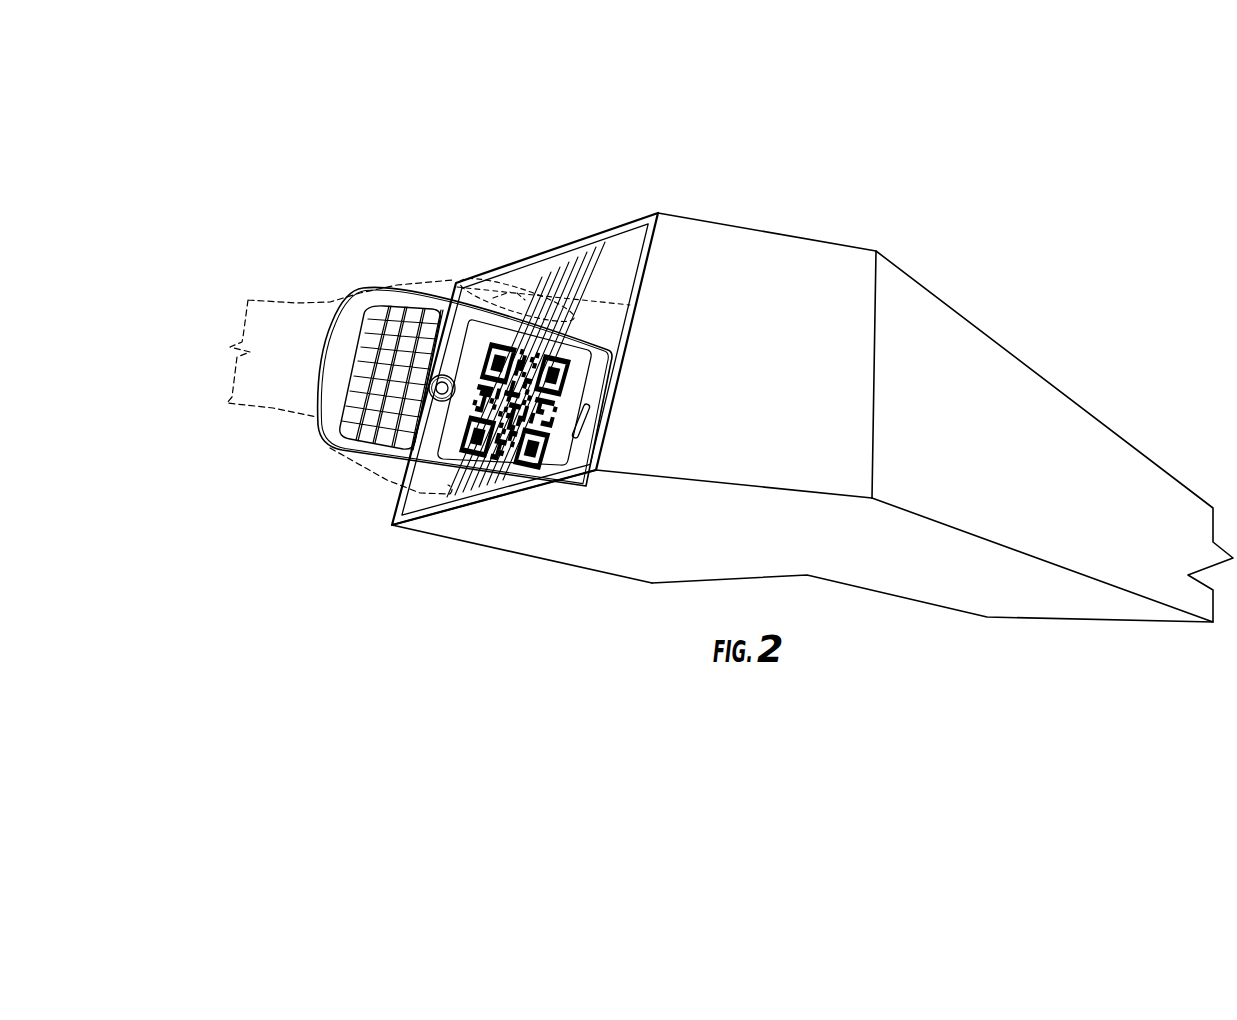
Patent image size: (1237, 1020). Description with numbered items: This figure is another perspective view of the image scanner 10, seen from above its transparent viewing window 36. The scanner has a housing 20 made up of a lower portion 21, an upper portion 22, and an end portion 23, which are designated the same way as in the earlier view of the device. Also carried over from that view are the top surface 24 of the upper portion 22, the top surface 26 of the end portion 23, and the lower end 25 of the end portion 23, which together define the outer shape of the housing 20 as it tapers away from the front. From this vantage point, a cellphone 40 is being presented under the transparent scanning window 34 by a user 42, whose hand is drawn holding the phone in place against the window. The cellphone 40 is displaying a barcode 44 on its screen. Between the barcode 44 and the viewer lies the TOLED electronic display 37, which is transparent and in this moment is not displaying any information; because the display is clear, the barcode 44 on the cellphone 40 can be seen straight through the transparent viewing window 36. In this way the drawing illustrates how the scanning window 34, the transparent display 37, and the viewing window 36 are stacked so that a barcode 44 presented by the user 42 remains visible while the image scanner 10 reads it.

The image scanner 10 is at (880, 150).
The housing 20 is at (767, 232).
The lower portion 21 is at (1053, 383).
The upper portion 22 is at (715, 542).
The end portion 23 is at (537, 532).
The top surface of the upper portion 24 is at (706, 278).
The lower end of the end portion 25 is at (452, 522).
The top surface of the end portion 26 is at (580, 478).
The transparent scanning window 34 is at (478, 272).
The transparent viewing window 36 is at (624, 268).
The TOLED electronic display 37 is at (562, 278).
The cellphone 40 is at (347, 338).
The user 42 is at (305, 352).
The barcode 44 is at (462, 436).